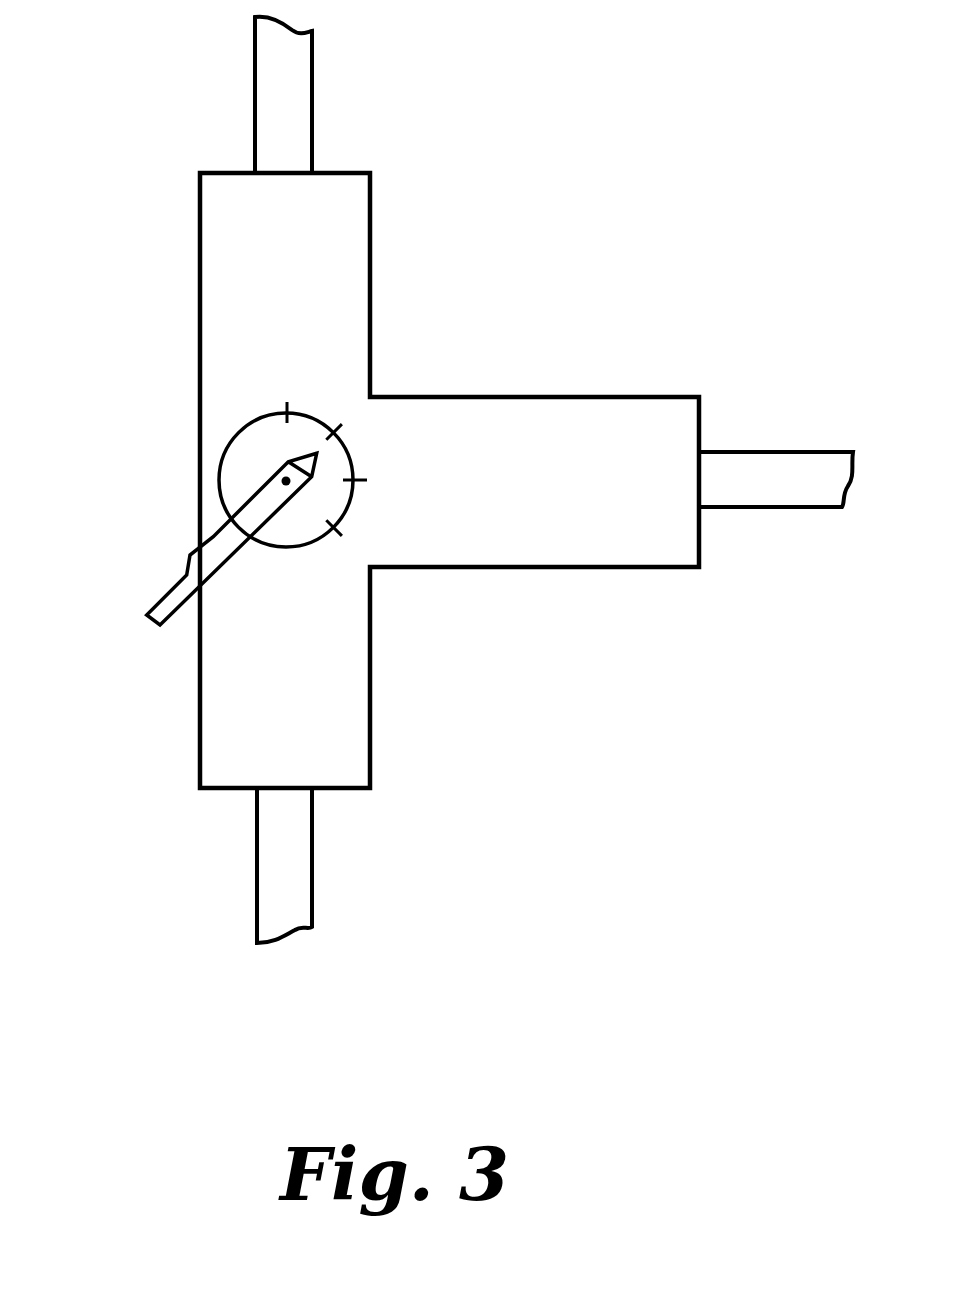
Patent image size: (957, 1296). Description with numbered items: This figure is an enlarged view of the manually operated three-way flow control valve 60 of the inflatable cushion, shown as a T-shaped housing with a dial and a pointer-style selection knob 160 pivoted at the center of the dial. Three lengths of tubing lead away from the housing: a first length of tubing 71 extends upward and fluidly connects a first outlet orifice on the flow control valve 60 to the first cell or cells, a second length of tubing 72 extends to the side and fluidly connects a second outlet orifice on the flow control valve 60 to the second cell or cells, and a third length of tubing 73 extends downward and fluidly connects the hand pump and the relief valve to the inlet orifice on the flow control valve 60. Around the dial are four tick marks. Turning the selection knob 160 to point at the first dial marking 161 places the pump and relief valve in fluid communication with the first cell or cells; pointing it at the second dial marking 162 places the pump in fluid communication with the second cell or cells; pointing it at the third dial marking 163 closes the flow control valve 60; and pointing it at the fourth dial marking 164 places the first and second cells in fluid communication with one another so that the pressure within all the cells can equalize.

The three-way flow control valve 60 is at (242, 462).
The first length of tubing 71 is at (272, 90).
The second length of tubing 72 is at (815, 452).
The third length of tubing 73 is at (270, 895).
The selection knob 160 is at (222, 545).
The first dial marking 161 is at (290, 406).
The second dial marking 162 is at (338, 431).
The third dial marking 163 is at (355, 484).
The fourth dial marking 164 is at (337, 532).